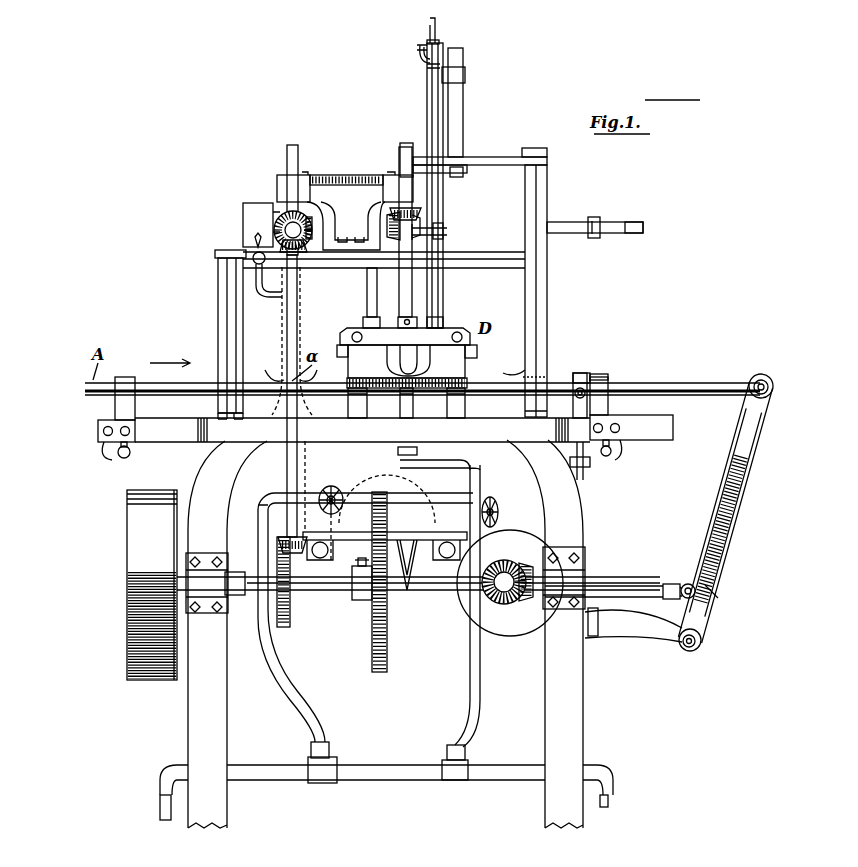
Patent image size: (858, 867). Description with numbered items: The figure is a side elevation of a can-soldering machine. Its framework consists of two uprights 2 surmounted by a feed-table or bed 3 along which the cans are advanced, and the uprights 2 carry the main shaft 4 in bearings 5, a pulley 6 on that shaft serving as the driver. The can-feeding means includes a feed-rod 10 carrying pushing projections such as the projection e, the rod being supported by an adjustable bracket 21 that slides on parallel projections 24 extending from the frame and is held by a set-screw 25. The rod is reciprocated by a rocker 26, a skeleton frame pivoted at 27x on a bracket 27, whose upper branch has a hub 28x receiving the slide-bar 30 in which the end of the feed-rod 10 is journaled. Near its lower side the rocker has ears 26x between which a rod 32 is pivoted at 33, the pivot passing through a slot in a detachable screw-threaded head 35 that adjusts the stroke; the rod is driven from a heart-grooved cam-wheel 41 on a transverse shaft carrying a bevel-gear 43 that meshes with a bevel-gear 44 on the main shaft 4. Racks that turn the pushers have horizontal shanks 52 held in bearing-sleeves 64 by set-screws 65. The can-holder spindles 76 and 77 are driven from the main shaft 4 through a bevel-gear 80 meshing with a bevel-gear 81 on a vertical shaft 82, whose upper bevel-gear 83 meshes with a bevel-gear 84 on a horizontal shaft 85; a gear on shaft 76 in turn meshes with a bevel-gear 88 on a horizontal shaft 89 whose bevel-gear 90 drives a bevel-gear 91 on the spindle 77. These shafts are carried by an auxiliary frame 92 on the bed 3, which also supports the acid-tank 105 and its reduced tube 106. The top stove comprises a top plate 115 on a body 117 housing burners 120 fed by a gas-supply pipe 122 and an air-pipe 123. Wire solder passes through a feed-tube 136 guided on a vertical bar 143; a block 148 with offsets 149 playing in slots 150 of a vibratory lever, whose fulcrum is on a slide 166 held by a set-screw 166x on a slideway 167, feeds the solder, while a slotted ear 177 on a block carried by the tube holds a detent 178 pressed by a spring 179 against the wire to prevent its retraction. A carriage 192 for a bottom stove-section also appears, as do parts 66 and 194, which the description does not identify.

The uprights 2 is at (186, 704).
The feed-table 3 is at (362, 430).
The main shaft 4 is at (345, 592).
The bearings 5 is at (204, 553).
The pulley 6 is at (125, 598).
The feed-rod 10 is at (693, 381).
The bracket 21 is at (599, 400).
The projection 24 is at (103, 431).
The set-screw 25 is at (118, 456).
The rocker 26 is at (740, 497).
The ears 26x is at (693, 576).
The bracket 27 is at (655, 639).
The pivot 27x is at (692, 648).
The hub 28x is at (770, 380).
The slide-bar 30 is at (773, 385).
The rod 32 is at (648, 570).
The pivot 33 is at (696, 591).
The detachable head 35 is at (668, 584).
The cam-wheel 41 is at (505, 636).
The bevel-gear 43 is at (504, 560).
The bevel-gear 44 is at (526, 602).
The shank 52 is at (588, 404).
The bearing-sleeve 64 is at (599, 374).
The set-screw 65 is at (585, 372).
The valve 66 is at (580, 388).
The shaft 76 is at (287, 155).
The spindle 77 is at (400, 152).
The bevel-gear 80 is at (288, 628).
The bevel-gear 81 is at (282, 538).
The vertical shaft 82 is at (287, 472).
The bevel-gear 83 is at (300, 262).
The bevel-gear 84 is at (274, 225).
The horizontal shaft 85 is at (285, 232).
The bevel-gear 88 is at (312, 225).
The horizontal shaft 89 is at (348, 230).
The bevel-gear 90 is at (397, 242).
The bevel-gear 91 is at (418, 212).
The auxiliary frame 92 is at (548, 305).
The acid-tank 105 is at (258, 203).
The tube 106 is at (266, 285).
The top plate 115 is at (452, 327).
The stove body 117 is at (470, 357).
The burners 120 is at (408, 360).
The gas-supply pipe 122 is at (476, 708).
The air-pipe 123 is at (300, 712).
The solder feed-tube 136 is at (428, 104).
The vertical bar 143 is at (463, 108).
The block 148 is at (420, 230).
The offsets 149 is at (441, 236).
The longitudinal slots 150 is at (445, 236).
The slide 166 is at (596, 238).
The set-screw 166x is at (599, 222).
The slideway 167 is at (580, 213).
The slotted ear 177 is at (419, 58).
The detent 178 is at (424, 66).
The spring 179 is at (427, 42).
The carriage 192 is at (412, 575).
The bearing 194 is at (322, 562).
The projection e is at (505, 373).